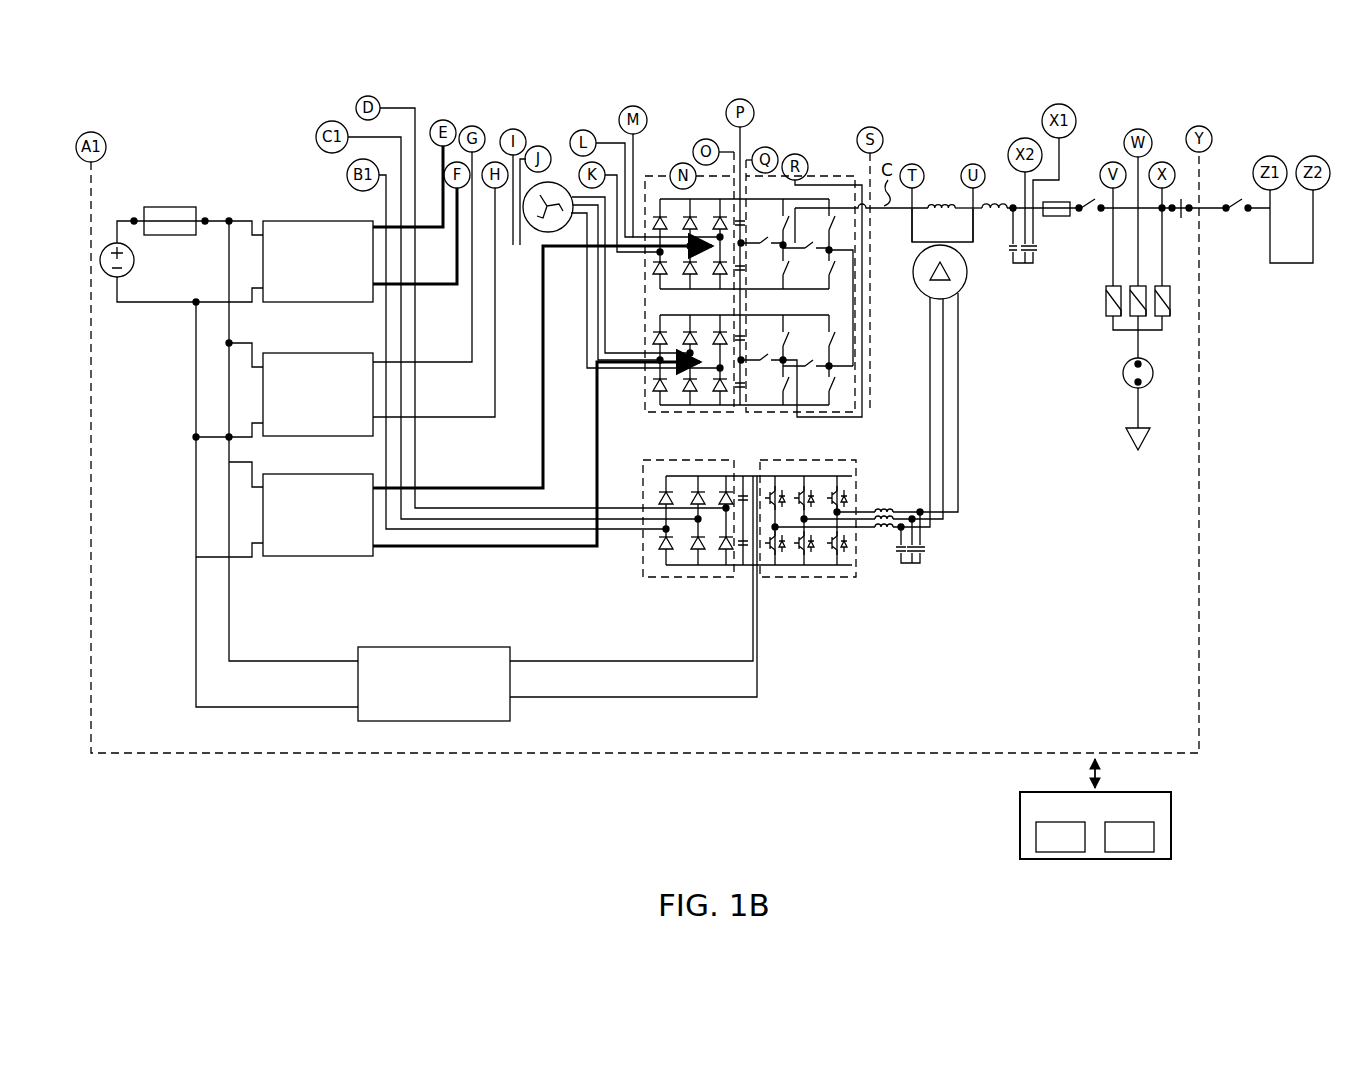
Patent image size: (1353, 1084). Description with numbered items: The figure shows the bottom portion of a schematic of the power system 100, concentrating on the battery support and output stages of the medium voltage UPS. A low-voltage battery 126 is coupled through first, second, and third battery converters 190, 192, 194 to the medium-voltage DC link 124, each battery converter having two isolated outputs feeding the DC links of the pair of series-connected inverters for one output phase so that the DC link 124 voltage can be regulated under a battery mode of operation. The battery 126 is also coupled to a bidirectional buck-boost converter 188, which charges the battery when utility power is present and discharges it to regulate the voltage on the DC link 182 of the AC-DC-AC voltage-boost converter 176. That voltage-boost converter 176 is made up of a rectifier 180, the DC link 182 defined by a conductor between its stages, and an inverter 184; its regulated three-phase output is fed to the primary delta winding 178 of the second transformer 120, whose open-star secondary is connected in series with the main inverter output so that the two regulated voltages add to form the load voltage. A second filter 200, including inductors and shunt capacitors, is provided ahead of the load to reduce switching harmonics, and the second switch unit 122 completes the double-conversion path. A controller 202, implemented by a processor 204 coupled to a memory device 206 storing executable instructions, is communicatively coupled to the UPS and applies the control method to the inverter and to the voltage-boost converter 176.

The power system 100 is at (180, 135).
The battery 126 is at (105, 245).
The first battery converter 190 is at (292, 220).
The second battery converter 192 is at (296, 353).
The third battery converter 194 is at (296, 474).
The bidirectional buck-boost converter 188 is at (435, 647).
The DC link 124 is at (741, 414).
The rectifier 180 is at (688, 460).
The DC link 182 is at (748, 576).
The inverter 184 is at (808, 459).
The AC-DC-AC voltage-boost converter 176 is at (778, 598).
The primary delta winding 178 is at (913, 272).
The second transformer 120 is at (972, 253).
The second switch unit 122 is at (1086, 219).
The second filter 200 is at (994, 198).
The controller 202 is at (1172, 827).
The processor 204 is at (1060, 837).
The memory device 206 is at (1129, 837).